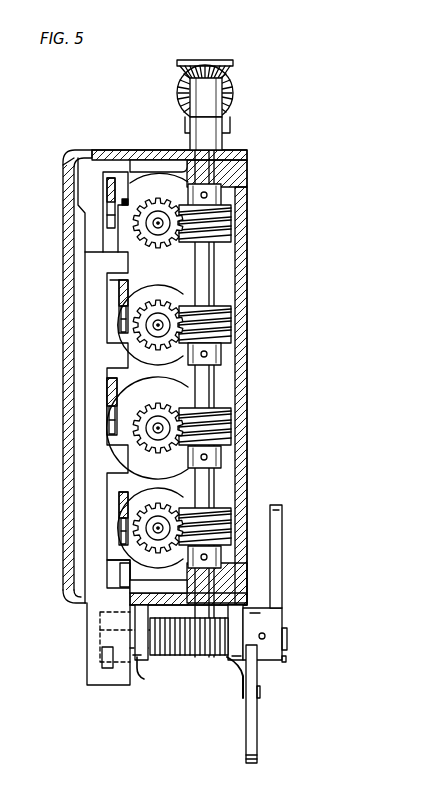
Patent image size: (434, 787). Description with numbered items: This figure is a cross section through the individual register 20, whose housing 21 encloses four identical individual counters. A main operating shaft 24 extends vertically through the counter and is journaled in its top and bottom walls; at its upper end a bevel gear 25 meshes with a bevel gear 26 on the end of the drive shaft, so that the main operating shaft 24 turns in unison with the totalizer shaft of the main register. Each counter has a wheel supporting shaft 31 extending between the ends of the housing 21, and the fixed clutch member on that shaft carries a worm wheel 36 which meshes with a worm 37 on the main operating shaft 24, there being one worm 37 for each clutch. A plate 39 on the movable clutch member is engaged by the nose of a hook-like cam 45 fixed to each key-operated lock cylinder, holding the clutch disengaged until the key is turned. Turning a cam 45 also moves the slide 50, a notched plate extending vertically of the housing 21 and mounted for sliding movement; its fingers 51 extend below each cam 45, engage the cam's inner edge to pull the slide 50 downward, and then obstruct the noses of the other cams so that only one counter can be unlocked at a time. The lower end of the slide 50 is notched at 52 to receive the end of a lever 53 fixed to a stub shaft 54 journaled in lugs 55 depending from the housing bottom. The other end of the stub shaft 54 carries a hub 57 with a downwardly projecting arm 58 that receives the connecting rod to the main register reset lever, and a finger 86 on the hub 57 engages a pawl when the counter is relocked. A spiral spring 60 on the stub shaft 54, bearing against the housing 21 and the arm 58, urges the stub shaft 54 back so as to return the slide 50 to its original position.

The individual register 20 is at (237, 150).
The housing 21 is at (243, 184).
The main operating shaft 24 is at (210, 263).
The bevel gear 25 is at (232, 72).
The bevel gear 26 is at (233, 92).
The wheel supporting shaft 31 is at (158, 223).
The worm wheel 36 is at (146, 209).
The worm 37 is at (232, 222).
The plate 39 is at (140, 172).
The cam 45 is at (107, 197).
The slide 50 is at (93, 605).
The fingers 51 is at (117, 256).
The notch 52 is at (107, 668).
The lever 53 is at (102, 658).
The stub shaft 54 is at (283, 632).
The lugs or ears 55 is at (137, 657).
The hub 57 is at (286, 659).
The arm 58 is at (252, 722).
The spiral spring 60 is at (183, 655).
The finger 86 is at (277, 545).